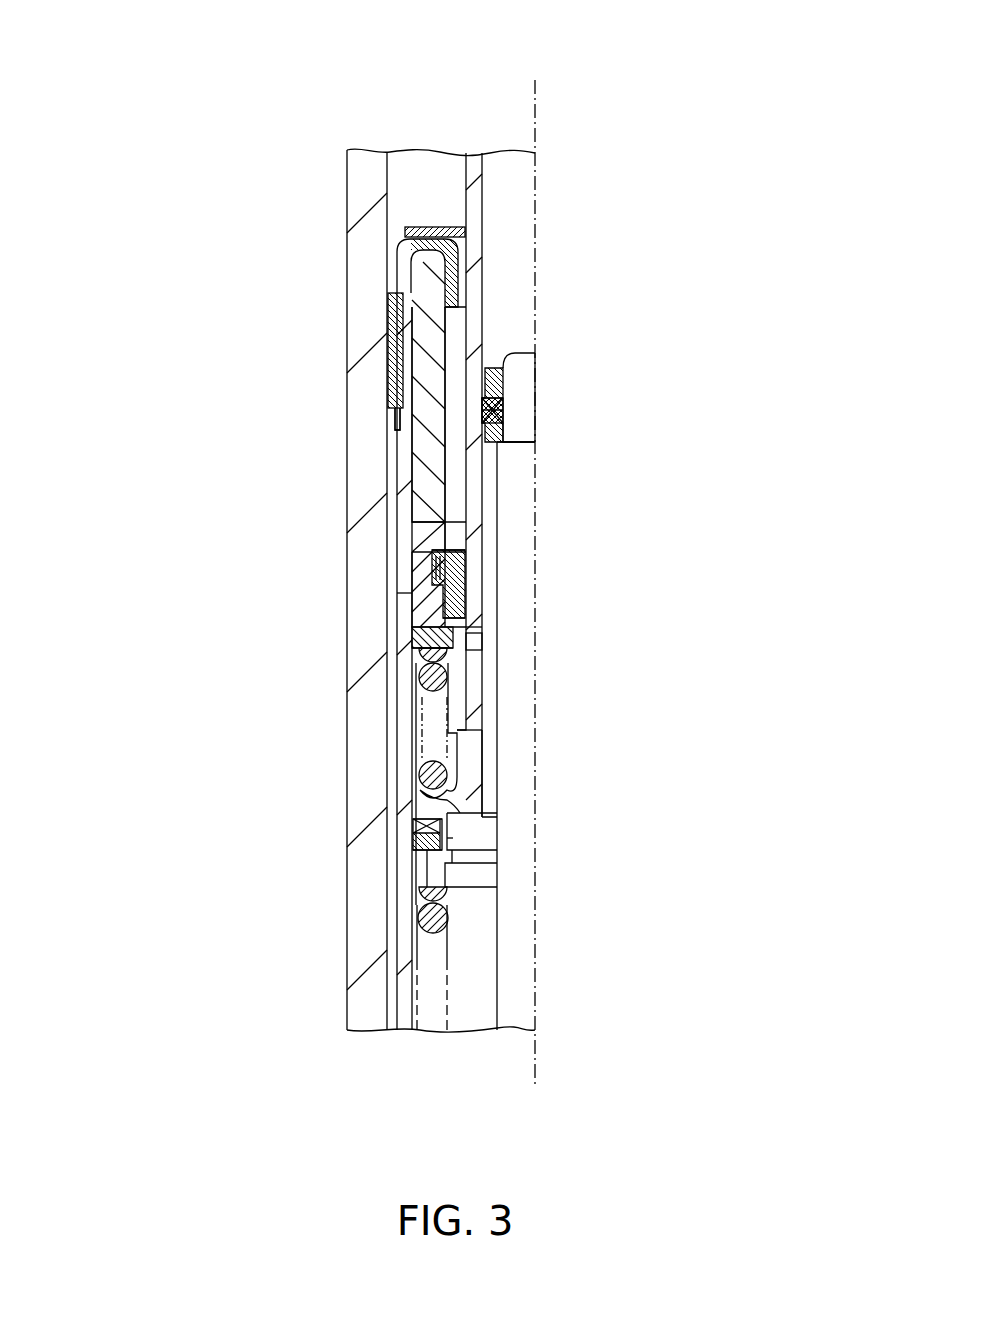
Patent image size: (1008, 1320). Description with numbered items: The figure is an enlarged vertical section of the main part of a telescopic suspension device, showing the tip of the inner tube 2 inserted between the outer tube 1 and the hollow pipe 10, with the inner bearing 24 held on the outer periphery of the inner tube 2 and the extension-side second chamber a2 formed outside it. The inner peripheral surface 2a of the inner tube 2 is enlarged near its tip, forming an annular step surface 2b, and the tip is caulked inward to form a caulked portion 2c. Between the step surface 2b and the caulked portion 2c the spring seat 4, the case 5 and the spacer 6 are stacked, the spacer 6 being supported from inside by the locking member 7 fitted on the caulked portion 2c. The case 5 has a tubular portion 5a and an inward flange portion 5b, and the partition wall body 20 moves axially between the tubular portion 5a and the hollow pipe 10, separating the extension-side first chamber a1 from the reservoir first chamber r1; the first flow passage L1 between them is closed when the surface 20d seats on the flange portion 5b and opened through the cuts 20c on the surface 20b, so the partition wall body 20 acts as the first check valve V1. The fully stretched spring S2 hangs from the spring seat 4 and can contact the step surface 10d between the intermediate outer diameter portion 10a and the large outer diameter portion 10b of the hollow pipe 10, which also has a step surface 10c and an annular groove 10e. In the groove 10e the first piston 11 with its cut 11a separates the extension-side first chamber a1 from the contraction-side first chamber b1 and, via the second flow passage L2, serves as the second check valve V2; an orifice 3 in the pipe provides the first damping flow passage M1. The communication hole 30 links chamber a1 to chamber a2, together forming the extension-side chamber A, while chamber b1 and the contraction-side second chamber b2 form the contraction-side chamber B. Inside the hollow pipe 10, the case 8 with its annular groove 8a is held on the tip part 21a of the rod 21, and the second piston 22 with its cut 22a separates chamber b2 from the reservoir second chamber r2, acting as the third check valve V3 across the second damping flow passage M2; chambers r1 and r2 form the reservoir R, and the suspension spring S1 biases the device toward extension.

The outer tube 1 is at (358, 1012).
The inner tube 2 is at (404, 1012).
The inner peripheral surface 2a is at (412, 265).
The step surface 2b is at (413, 643).
The caulked portion 2c is at (420, 210).
The orifice 3 is at (457, 685).
The first damping flow passage M1 is at (529, 686).
The spring seat 4 is at (413, 630).
The case 5 is at (341, 547).
The tubular portion 5a is at (417, 567).
The flange portion 5b is at (417, 503).
The spacer 6 is at (430, 337).
The locking member 7 is at (463, 250).
The case 8 is at (555, 392).
The annular groove 8a is at (507, 413).
The hollow pipe 10 is at (473, 485).
The intermediate outer diameter portion 10a is at (490, 728).
The large outer diameter portion 10b is at (452, 825).
The step surface 10c is at (473, 762).
The step surface 10d is at (460, 777).
The annular groove 10e is at (414, 842).
The first piston 11 is at (319, 827).
The second check valve V2 is at (319, 827).
The cut 11a is at (413, 820).
The partition wall body 20 is at (557, 607).
The first check valve V1 is at (557, 607).
The extension-side first chamber side surface 20b is at (468, 620).
The cuts 20c is at (468, 603).
The surface 20d is at (467, 540).
The rod 21 is at (546, 773).
The tip part 21a is at (522, 446).
The second piston 22 is at (475, 416).
The third check valve V3 is at (360, 413).
The cut 22a is at (395, 370).
The inner bearing 24 is at (388, 323).
The communication hole 30 is at (402, 706).
The second damping flow passage M2 is at (507, 402).
The suspension spring S1 is at (417, 913).
The fully stretched spring S2 is at (418, 770).
The first flow passage L1 is at (410, 593).
The second flow passage L2 is at (453, 838).
The extension-side first chamber a1 is at (480, 650).
The extension-side second chamber a2 is at (387, 937).
The contraction-side first chamber b1 is at (482, 937).
The contraction-side second chamber b2 is at (492, 478).
The extension-side chamber A is at (385, 984).
The contraction-side chamber B is at (430, 1028).
The reservoir R is at (388, 182).
The reservoir first chamber r1 is at (422, 165).
The reservoir second chamber r2 is at (515, 186).